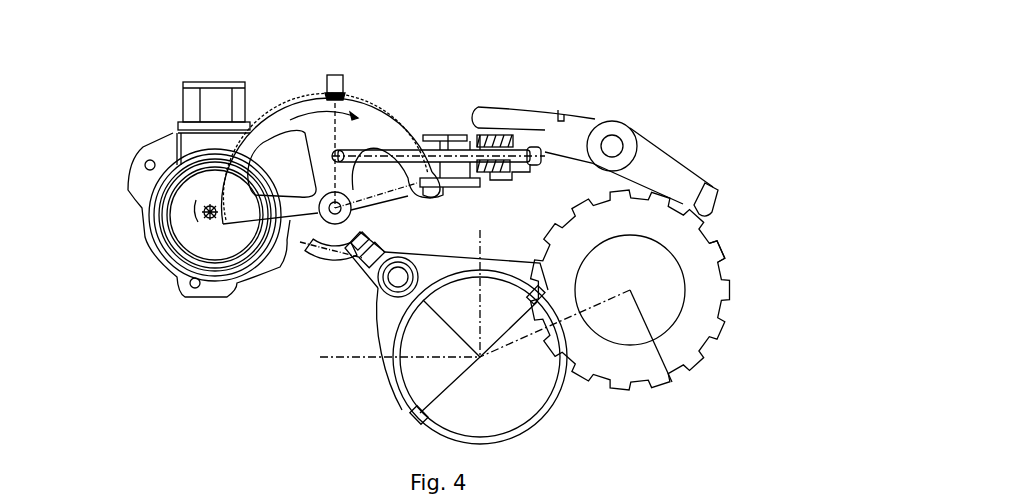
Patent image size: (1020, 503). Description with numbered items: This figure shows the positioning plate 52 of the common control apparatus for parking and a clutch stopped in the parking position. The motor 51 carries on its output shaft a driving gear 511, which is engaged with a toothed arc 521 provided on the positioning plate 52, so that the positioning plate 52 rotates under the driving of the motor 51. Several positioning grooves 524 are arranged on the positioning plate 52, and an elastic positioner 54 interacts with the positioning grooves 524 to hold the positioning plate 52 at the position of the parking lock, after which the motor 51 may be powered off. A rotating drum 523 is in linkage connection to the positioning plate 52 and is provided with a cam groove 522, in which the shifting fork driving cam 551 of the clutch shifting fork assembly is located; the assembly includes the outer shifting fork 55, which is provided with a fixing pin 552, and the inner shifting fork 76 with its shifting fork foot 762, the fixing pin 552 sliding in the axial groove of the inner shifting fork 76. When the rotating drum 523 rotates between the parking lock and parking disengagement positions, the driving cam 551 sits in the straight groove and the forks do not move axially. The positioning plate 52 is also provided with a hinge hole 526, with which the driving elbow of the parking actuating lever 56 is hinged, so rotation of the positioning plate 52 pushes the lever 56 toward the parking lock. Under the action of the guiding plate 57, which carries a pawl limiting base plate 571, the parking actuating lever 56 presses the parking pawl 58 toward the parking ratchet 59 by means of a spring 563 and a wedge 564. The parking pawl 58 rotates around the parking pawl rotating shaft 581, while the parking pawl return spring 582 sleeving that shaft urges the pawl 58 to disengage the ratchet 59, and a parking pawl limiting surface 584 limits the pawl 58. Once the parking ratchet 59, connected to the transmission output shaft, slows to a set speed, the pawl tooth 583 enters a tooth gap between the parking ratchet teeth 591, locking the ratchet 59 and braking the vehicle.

The motor 51 is at (197, 183).
The driving gear 511 is at (177, 267).
The toothed arc 521 is at (228, 153).
The hinge hole 526 is at (230, 157).
The positioning plate 52 is at (293, 120).
The cam groove 522 is at (340, 255).
The rotating drum 523 is at (355, 213).
The positioning groove 524 is at (423, 140).
The elastic positioner 54 is at (325, 84).
The parking actuating lever 56 is at (437, 162).
The spring 563 is at (448, 135).
The wedge 564 is at (481, 133).
The parking pawl limiting surface 584 is at (483, 133).
The guiding plate 57 is at (494, 200).
The pawl limiting base plate 571 is at (490, 182).
The parking pawl 58 is at (588, 115).
The parking pawl rotating shaft 581 is at (612, 146).
The parking pawl return spring 582 is at (560, 110).
The pawl tooth 583 is at (708, 188).
The parking ratchet 59 is at (702, 258).
The parking ratchet tooth 591 is at (714, 232).
The inner shifting fork 76 is at (382, 326).
The shifting fork foot 762 is at (412, 422).
The outer shifting fork 55 is at (375, 283).
The shifting fork driving cam 551 is at (380, 270).
The fixing pin 552 is at (378, 272).